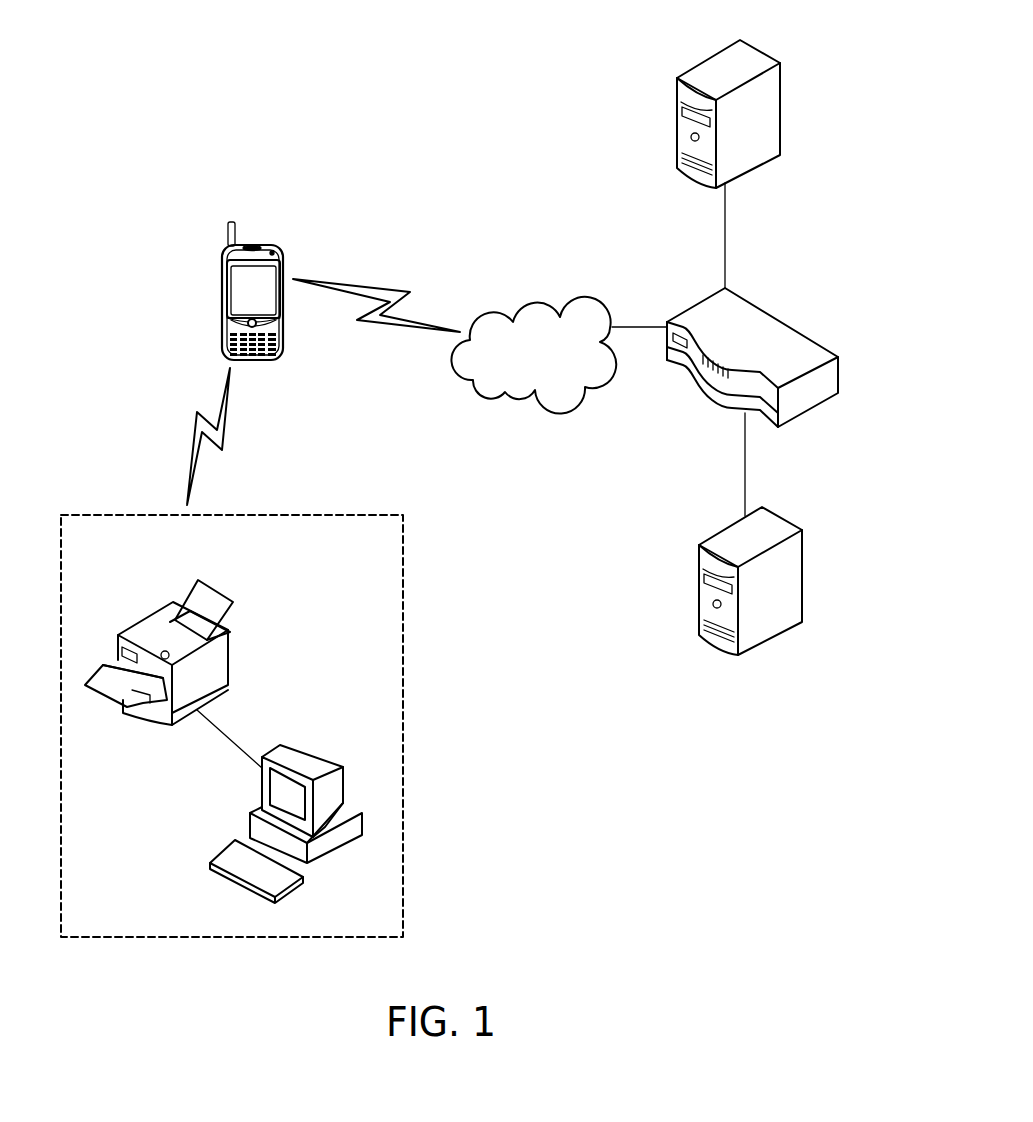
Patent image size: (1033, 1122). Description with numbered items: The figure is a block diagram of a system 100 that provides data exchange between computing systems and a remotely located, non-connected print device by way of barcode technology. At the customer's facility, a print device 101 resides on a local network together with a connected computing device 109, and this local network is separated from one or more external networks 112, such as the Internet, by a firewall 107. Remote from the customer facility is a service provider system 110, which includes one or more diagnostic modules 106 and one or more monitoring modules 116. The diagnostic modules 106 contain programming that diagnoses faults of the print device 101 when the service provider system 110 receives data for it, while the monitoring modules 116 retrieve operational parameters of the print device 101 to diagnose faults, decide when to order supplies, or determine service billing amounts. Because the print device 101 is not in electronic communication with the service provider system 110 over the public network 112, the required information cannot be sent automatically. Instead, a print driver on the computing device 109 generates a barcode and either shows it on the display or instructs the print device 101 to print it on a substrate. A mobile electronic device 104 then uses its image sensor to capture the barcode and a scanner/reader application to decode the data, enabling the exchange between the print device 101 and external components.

The system 100 is at (170, 80).
The mobile electronic device 104 is at (232, 222).
The external network 112 is at (522, 303).
The service provider system 110 is at (693, 305).
The monitoring module 116 is at (680, 82).
The diagnostic module 106 is at (703, 545).
The firewall 107 is at (405, 817).
The print device 101 is at (147, 620).
The computing device 109 is at (315, 750).